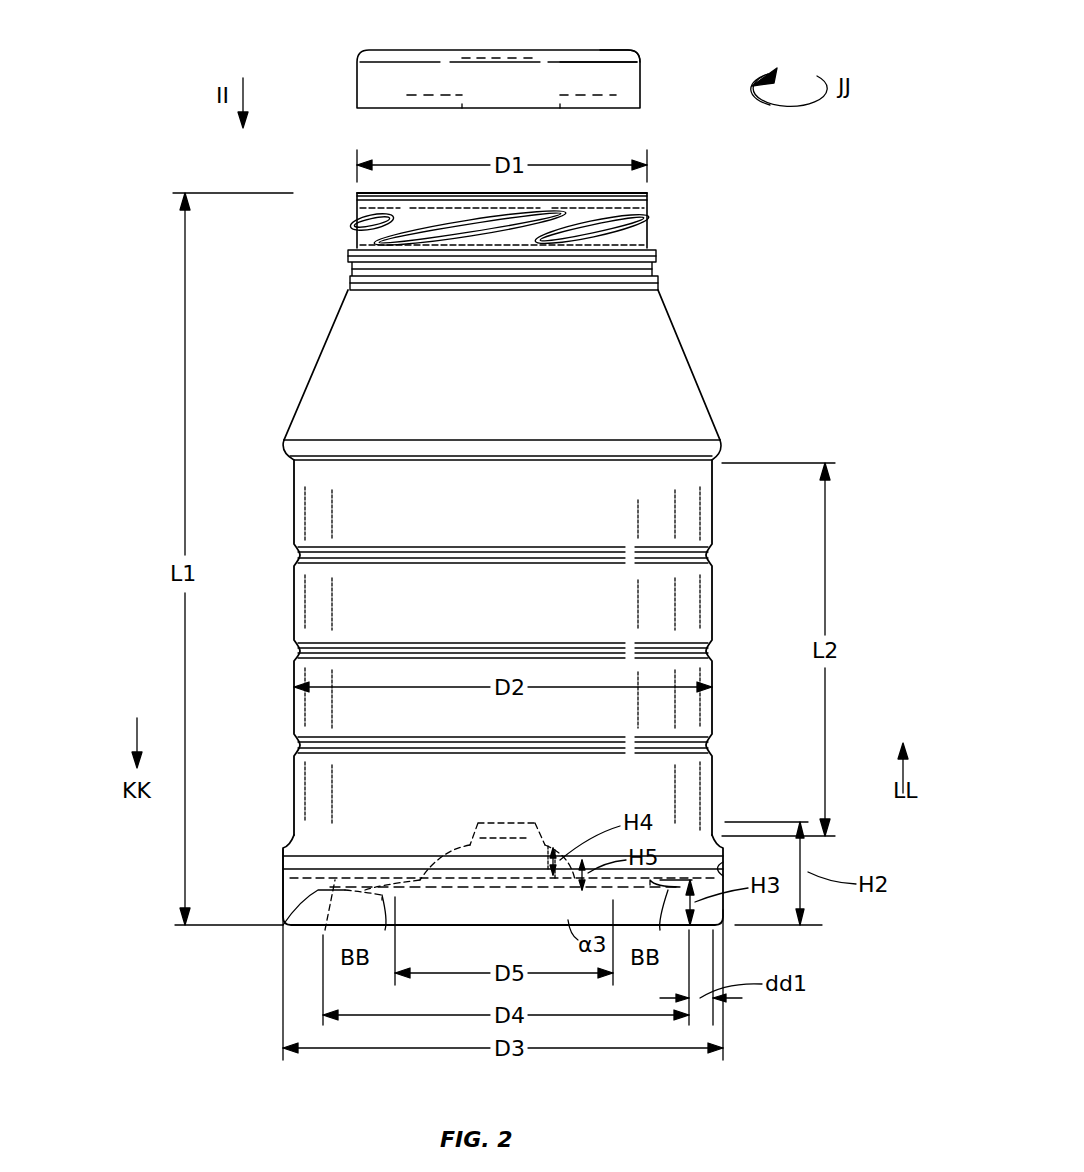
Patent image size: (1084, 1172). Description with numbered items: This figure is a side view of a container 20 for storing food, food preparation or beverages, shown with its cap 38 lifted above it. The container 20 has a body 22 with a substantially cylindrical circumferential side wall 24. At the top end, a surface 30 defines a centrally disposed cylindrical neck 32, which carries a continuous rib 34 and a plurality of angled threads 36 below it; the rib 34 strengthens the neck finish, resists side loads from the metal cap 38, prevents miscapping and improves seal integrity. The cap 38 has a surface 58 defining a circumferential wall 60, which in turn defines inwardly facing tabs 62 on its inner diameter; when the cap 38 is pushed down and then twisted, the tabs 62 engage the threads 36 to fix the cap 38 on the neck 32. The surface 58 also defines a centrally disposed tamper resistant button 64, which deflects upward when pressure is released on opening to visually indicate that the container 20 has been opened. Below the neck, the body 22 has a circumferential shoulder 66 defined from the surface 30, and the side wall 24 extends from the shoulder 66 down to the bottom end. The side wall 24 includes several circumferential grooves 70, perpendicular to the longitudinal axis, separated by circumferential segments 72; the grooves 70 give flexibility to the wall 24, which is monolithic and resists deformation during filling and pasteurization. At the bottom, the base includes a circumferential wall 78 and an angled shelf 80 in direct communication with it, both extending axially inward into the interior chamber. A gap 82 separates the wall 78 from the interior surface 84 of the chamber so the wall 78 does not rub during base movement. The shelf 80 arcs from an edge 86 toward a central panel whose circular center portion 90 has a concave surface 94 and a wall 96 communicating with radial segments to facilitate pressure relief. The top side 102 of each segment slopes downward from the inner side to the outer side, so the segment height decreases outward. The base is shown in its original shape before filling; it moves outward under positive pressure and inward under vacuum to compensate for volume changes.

The container 20 is at (108, 305).
The body 22 is at (315, 383).
The circumferential side wall 24 is at (296, 592).
The surface 30 is at (623, 240).
The cylindrical neck 32 is at (365, 238).
The rib 34 is at (658, 188).
The angled threads 36 is at (640, 230).
The cap 38 is at (625, 54).
The surface of cap 58 is at (357, 72).
The circumferential wall 60 is at (598, 78).
The inwardly facing tabs 62 is at (405, 103).
The button 64 is at (500, 50).
The circumferential shoulder 66 is at (718, 442).
The circumferential grooves 70 is at (713, 555).
The circumferential segments 72 is at (306, 502).
The circumferential wall 78 is at (292, 893).
The shelf 80 is at (395, 893).
The gap 82 is at (305, 905).
The interior surface 84 is at (727, 867).
The edge 86 is at (347, 889).
The circular center portion 90 is at (488, 822).
The surface of center portion 94 is at (520, 822).
The wall 96 is at (480, 838).
The top side 102 is at (560, 850).